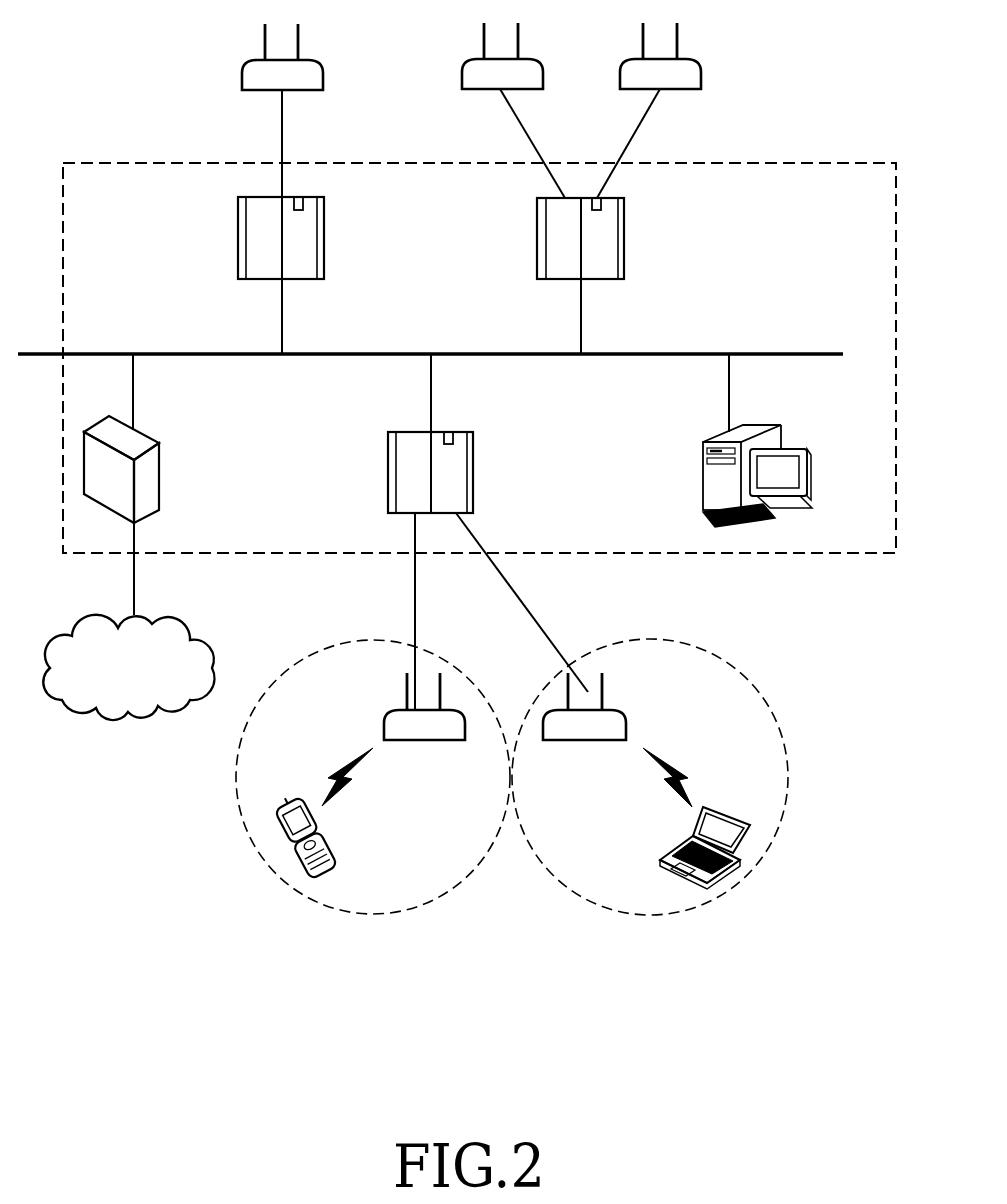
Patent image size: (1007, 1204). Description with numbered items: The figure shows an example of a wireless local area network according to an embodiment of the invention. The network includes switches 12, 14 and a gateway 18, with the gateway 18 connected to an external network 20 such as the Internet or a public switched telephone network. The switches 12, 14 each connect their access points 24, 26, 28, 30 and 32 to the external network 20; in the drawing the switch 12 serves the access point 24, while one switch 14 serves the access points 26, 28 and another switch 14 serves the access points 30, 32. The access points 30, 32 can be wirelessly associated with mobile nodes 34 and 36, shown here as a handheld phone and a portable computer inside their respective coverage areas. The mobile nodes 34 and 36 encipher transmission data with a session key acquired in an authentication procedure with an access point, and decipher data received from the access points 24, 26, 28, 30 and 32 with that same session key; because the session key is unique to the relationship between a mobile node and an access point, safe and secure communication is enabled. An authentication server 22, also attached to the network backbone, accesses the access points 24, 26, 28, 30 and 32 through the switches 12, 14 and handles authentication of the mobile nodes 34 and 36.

The switch 12 is at (324, 236).
The switch 14 is at (624, 237).
The gateway 18 is at (159, 478).
The external network 20 is at (130, 715).
The authentication server 22 is at (811, 473).
The access point 24 is at (242, 79).
The access point 26 is at (462, 78).
The access point 28 is at (701, 78).
The access point 30 is at (425, 740).
The access point 32 is at (585, 740).
The mobile node 34 is at (330, 857).
The mobile node 36 is at (661, 861).